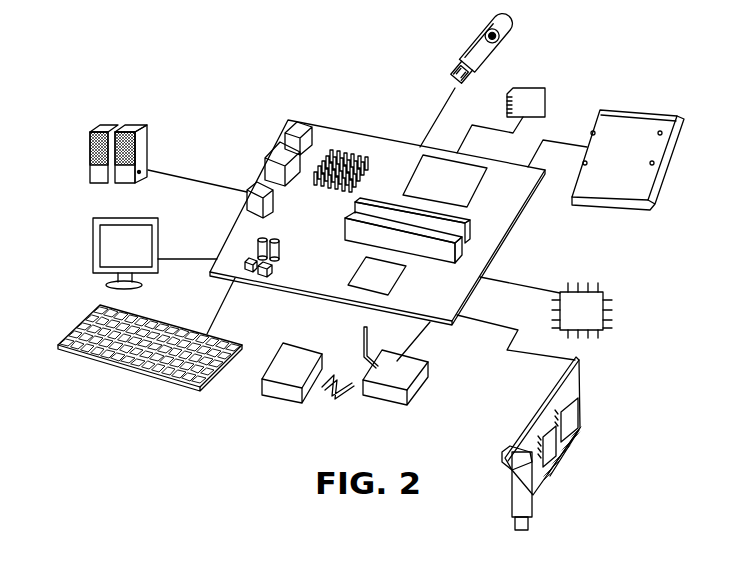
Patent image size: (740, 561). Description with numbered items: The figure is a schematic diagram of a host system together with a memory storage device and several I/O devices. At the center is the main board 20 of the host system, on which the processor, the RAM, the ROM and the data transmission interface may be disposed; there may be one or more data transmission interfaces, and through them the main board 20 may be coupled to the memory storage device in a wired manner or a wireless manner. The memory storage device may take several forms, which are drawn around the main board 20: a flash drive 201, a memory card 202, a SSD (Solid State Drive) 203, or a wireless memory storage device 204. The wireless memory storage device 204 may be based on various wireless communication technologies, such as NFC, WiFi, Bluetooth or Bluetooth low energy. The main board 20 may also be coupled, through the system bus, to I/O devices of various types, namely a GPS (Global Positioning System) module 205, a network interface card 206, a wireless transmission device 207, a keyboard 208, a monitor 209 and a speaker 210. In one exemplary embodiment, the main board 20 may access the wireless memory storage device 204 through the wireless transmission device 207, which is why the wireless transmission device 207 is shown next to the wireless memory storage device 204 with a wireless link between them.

The main board 20 is at (378, 152).
The flash drive 201 is at (470, 43).
The memory card 202 is at (549, 93).
The SSD (Solid State Drive) 203 is at (637, 110).
The wireless memory storage device 204 is at (274, 356).
The GPS (Global Positioning System) module 205 is at (612, 312).
The network interface card 206 is at (580, 403).
The wireless transmission device 207 is at (420, 390).
The keyboard 208 is at (155, 380).
The monitor 209 is at (92, 260).
The speaker 210 is at (88, 172).